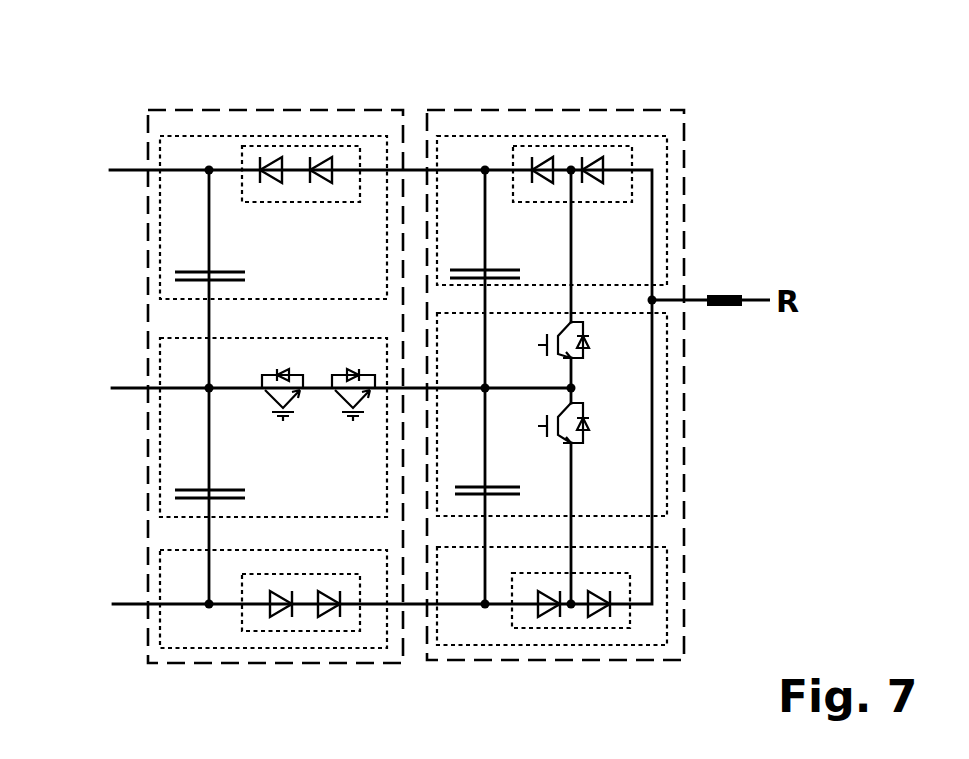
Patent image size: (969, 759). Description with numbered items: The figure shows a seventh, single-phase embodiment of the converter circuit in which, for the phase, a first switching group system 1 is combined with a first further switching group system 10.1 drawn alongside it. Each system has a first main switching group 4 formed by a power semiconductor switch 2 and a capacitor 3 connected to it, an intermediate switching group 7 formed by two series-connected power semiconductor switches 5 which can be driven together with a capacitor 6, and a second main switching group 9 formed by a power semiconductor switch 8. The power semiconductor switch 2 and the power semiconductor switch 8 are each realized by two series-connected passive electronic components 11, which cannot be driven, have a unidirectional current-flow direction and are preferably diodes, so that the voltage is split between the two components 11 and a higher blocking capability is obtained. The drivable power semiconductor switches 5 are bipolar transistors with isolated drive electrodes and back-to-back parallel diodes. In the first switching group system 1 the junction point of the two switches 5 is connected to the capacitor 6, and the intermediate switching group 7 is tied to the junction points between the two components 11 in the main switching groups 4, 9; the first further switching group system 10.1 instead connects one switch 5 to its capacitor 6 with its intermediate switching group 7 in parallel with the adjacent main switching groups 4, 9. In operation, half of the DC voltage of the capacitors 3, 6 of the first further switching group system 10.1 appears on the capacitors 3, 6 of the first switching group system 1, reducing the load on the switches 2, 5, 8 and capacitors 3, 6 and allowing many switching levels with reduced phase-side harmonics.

The first switching group system 1 is at (498, 110).
The first further switching group system 10.1 is at (243, 110).
The power semiconductor switch 2 is at (347, 145).
The capacitor 3 is at (197, 270).
The first main switching group 4 is at (370, 135).
The power semiconductor switch which can be driven 5 is at (330, 377).
The capacitor 6 is at (192, 488).
The intermediate switching group 7 is at (160, 483).
The power semiconductor switch 8 is at (240, 580).
The second main switching group 9 is at (160, 574).
The passive electronic component 11 is at (330, 157).